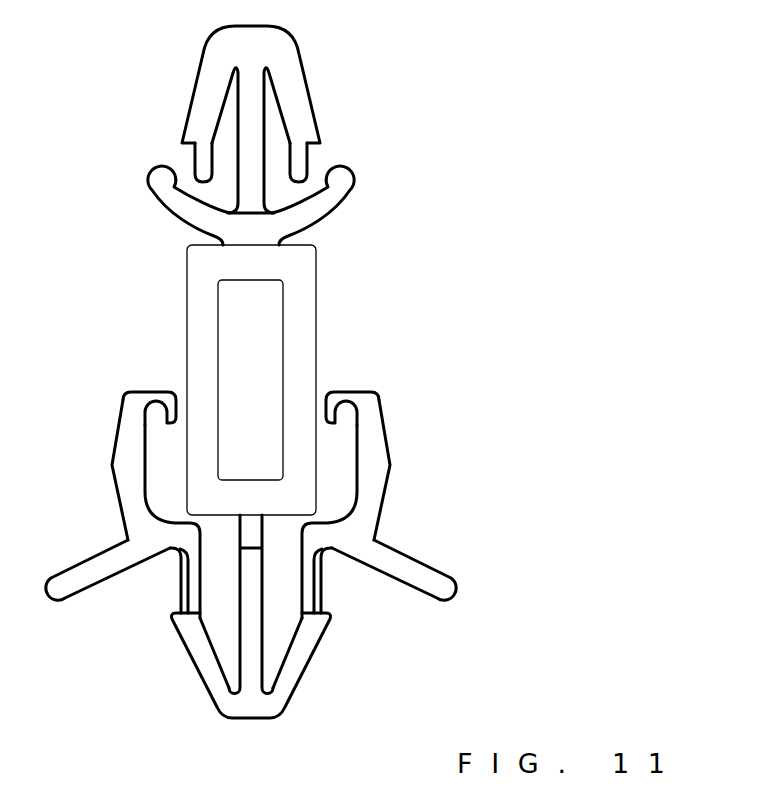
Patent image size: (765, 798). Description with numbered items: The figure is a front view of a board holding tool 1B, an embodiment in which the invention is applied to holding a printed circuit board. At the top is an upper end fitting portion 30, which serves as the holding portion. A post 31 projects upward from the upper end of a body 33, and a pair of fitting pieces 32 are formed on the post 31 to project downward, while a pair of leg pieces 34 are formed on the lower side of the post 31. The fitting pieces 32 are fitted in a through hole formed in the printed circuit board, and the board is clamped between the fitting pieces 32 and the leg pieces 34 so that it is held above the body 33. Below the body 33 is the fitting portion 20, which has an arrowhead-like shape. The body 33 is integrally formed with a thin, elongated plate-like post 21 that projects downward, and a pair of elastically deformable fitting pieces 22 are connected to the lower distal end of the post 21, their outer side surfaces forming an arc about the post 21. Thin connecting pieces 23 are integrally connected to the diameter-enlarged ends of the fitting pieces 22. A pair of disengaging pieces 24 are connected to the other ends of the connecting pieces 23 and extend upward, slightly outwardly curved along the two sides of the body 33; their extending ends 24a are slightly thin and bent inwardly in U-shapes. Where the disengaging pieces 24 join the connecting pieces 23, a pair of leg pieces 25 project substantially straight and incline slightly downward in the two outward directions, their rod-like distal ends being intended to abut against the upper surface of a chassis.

The board holding tool 1B is at (406, 43).
The upper end fitting portion 30 is at (356, 92).
The post 31 is at (258, 100).
The fitting pieces 32 is at (185, 138).
The body 33 is at (303, 302).
The leg pieces 34 is at (329, 203).
The fitting portion 20 is at (396, 650).
The post 21 is at (247, 662).
The fitting pieces 22 is at (192, 652).
The connecting pieces 23 is at (187, 588).
The disengaging pieces 24 is at (120, 463).
The extending ends 24a is at (170, 393).
The leg pieces 25 is at (100, 562).